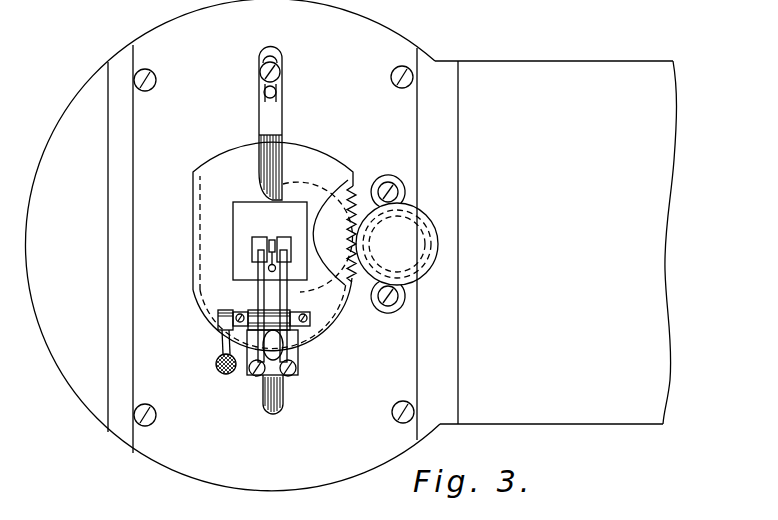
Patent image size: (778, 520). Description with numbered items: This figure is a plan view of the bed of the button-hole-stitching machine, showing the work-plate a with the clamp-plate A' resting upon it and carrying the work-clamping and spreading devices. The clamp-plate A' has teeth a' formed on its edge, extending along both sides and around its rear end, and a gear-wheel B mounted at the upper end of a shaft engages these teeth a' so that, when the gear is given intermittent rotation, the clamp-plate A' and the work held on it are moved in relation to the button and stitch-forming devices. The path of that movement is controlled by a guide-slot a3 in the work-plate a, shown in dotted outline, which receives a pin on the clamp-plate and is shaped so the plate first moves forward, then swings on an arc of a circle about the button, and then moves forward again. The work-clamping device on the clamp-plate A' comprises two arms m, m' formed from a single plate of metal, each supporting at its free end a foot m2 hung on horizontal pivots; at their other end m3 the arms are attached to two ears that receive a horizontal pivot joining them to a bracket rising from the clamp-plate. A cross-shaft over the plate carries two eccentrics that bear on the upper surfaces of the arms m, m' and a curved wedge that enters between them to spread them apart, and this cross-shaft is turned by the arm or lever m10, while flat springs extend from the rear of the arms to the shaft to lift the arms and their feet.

The work-plate a is at (350, 245).
The clamp-plate A' is at (278, 265).
The teeth a' is at (344, 221).
The lever a'' is at (259, 124).
The guide-slot a3 is at (306, 191).
The gear-wheel B is at (360, 248).
The arm m is at (242, 306).
The arm m' is at (297, 306).
The foot m2 is at (290, 233).
The end of the arms m3 is at (262, 381).
The arm or lever m10 is at (216, 365).